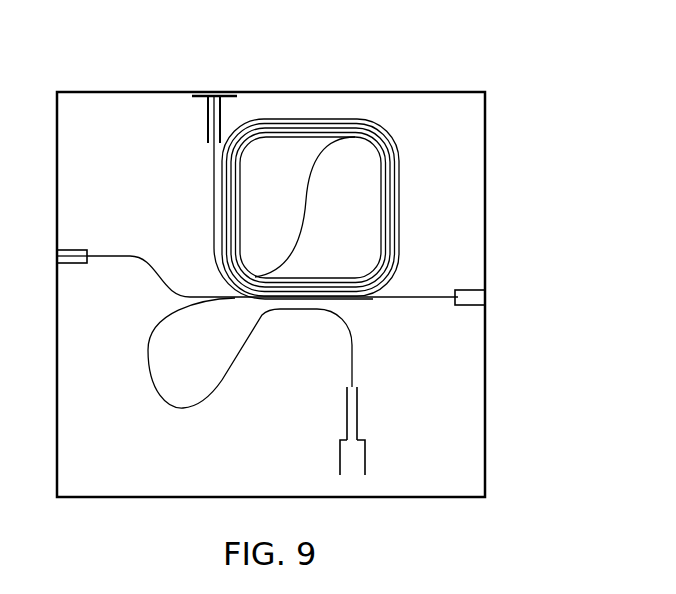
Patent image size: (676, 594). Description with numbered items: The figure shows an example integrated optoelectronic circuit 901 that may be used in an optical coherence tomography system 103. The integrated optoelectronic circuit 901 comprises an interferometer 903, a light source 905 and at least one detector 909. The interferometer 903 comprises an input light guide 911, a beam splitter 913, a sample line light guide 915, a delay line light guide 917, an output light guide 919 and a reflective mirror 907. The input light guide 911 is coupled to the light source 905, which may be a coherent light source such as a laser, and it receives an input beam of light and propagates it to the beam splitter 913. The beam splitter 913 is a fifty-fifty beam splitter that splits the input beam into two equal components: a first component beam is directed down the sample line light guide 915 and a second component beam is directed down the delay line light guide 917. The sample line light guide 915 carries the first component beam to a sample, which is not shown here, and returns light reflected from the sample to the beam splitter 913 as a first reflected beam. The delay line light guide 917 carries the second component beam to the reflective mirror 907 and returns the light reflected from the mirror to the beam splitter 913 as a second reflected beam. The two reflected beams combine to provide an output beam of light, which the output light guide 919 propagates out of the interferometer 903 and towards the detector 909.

The optical coherence tomography system 103 is at (387, 83).
The integrated optoelectronic circuit 901 is at (452, 370).
The interferometer 903 is at (457, 155).
The light source 905 is at (76, 250).
The reflective mirror 907 is at (277, 120).
The detector 909 is at (357, 457).
The input light guide 911 is at (143, 267).
The beam splitter 913 is at (230, 298).
The sample line light guide 915 is at (447, 277).
The delay line light guide 917 is at (213, 173).
The output light guide 919 is at (212, 385).